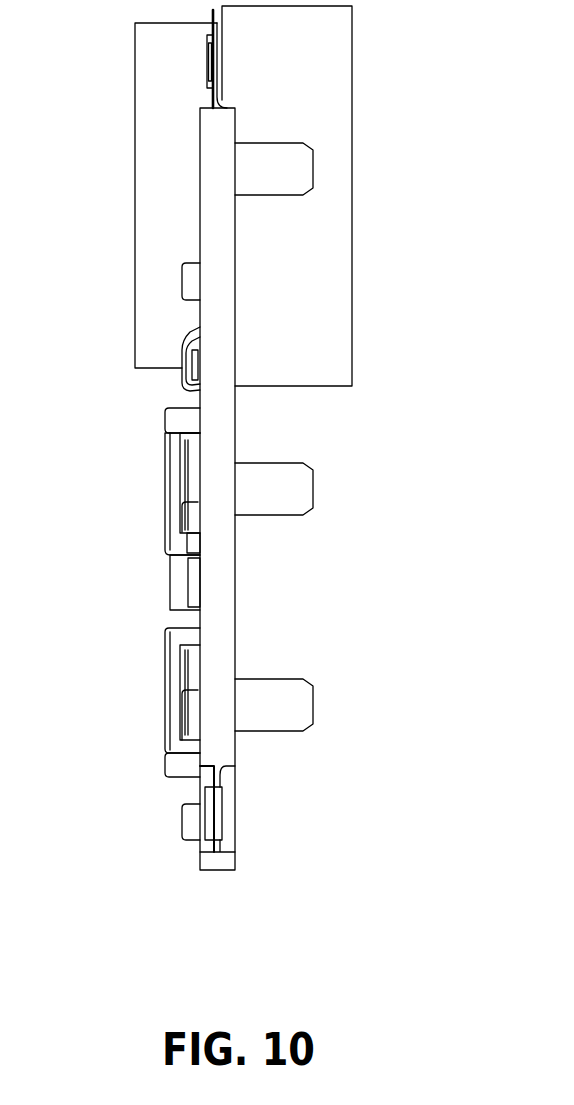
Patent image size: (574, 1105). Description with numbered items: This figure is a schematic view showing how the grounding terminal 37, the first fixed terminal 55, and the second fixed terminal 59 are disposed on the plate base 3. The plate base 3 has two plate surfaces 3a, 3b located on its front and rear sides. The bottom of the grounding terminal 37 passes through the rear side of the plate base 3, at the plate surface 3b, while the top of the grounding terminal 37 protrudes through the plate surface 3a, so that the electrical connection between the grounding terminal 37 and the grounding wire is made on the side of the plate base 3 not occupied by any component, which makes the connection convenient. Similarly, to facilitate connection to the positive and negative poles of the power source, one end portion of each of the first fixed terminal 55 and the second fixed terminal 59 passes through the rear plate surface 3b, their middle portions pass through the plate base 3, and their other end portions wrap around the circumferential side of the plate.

The plate base 3 is at (186, 172).
The plate surface 3a is at (199, 594).
The plate surface 3b is at (235, 587).
The grounding terminal 37 is at (302, 492).
The first fixed terminal 55 is at (302, 708).
The second fixed terminal 59 is at (206, 58).